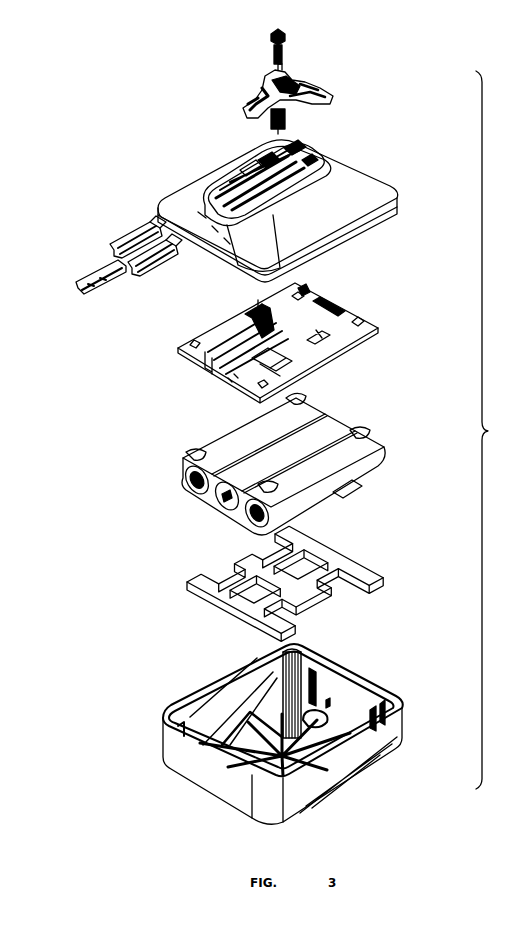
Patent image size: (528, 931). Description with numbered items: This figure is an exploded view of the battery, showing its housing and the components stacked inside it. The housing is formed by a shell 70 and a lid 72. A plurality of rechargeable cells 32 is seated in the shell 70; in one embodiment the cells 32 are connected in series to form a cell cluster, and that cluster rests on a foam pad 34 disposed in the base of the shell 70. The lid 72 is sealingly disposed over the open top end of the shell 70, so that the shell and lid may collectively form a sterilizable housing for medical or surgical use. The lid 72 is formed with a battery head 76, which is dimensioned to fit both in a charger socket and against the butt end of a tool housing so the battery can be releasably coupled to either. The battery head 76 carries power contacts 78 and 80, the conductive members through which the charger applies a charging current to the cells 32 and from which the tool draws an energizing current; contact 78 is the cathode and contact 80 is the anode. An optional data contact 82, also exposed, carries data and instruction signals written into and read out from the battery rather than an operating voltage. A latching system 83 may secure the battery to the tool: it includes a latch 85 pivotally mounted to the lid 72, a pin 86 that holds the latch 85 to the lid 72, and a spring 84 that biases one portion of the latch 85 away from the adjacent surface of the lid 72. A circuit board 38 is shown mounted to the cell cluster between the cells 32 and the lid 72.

The latching system 83 is at (375, 73).
The pin 86 is at (288, 38).
The latch 85 is at (334, 97).
The spring 84 is at (290, 120).
The lid 72 is at (316, 229).
The battery head 76 is at (226, 182).
The power contact 78 is at (126, 246).
The power contact 80 is at (158, 262).
The data contact 82 is at (86, 284).
The circuit board 38 is at (355, 333).
The rechargeable cells 32 is at (269, 440).
The foam pad 34 is at (232, 614).
The shell 70 is at (222, 782).